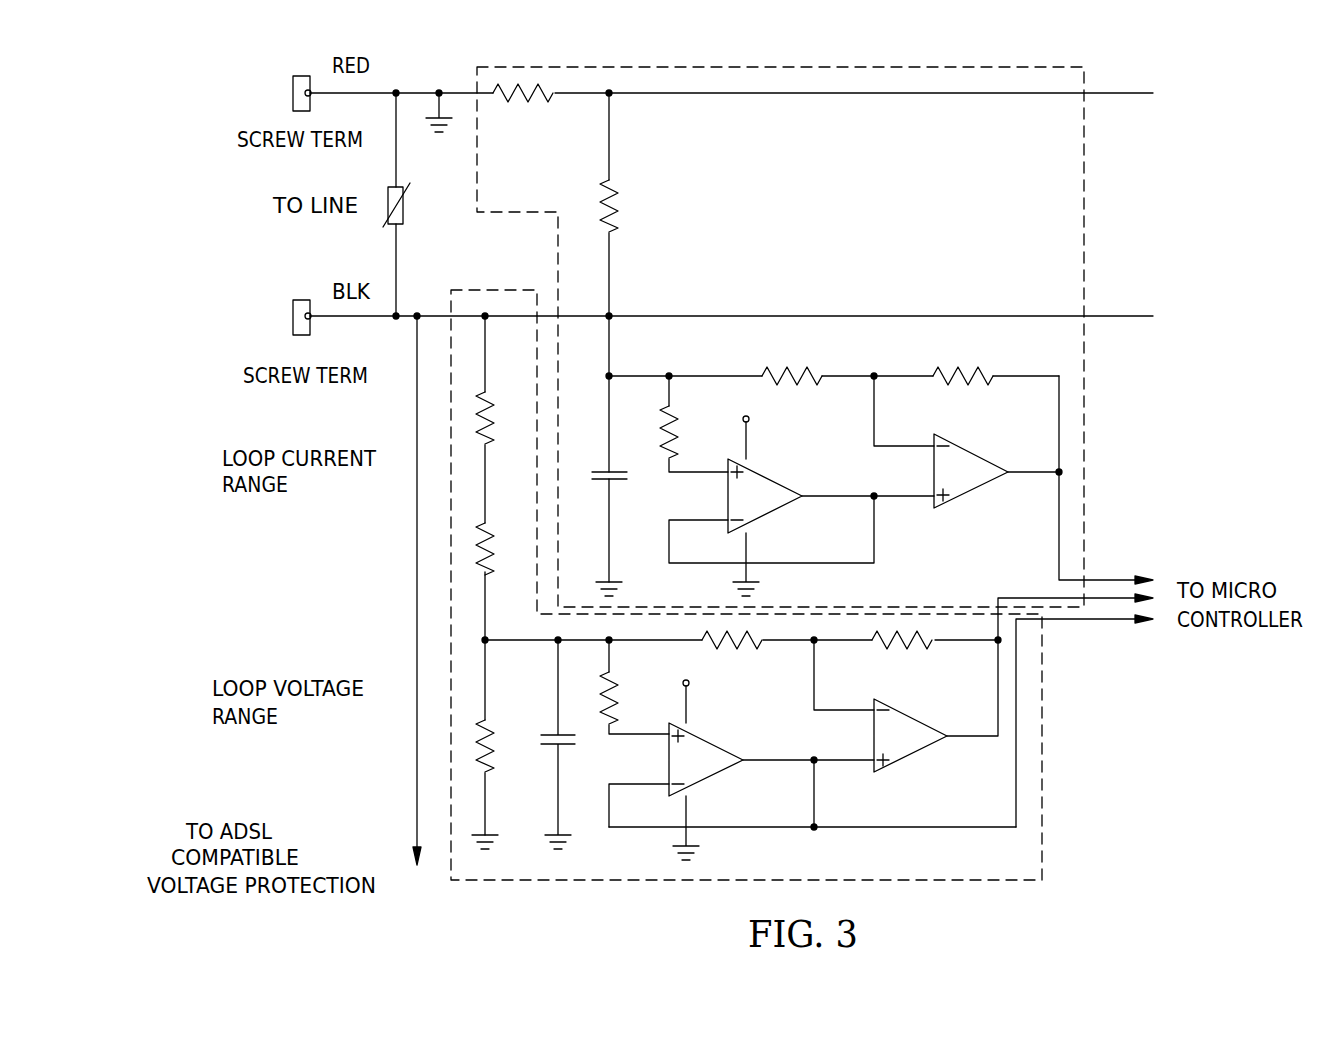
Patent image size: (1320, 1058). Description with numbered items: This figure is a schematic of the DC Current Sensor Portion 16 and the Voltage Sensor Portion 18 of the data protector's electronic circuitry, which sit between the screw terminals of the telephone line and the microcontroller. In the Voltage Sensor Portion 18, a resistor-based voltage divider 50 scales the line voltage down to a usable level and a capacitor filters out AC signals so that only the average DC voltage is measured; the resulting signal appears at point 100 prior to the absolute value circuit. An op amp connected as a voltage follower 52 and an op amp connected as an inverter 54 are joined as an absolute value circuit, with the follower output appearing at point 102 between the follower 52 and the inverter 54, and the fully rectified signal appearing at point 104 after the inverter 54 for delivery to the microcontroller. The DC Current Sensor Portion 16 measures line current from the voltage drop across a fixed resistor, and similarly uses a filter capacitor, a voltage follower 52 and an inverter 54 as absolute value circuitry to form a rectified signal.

The DC Current Sensor Portion 16 is at (1084, 437).
The Voltage Sensor Portion 18 is at (1042, 808).
The resistor-based voltage divider 50 is at (469, 632).
The voltage follower 52 is at (765, 472).
The inverter 54 is at (963, 445).
The point prior to the absolute value circuit 100 is at (692, 376).
The point between the follower and the inverter 102 is at (885, 497).
The point after the inverter 104 is at (1093, 580).